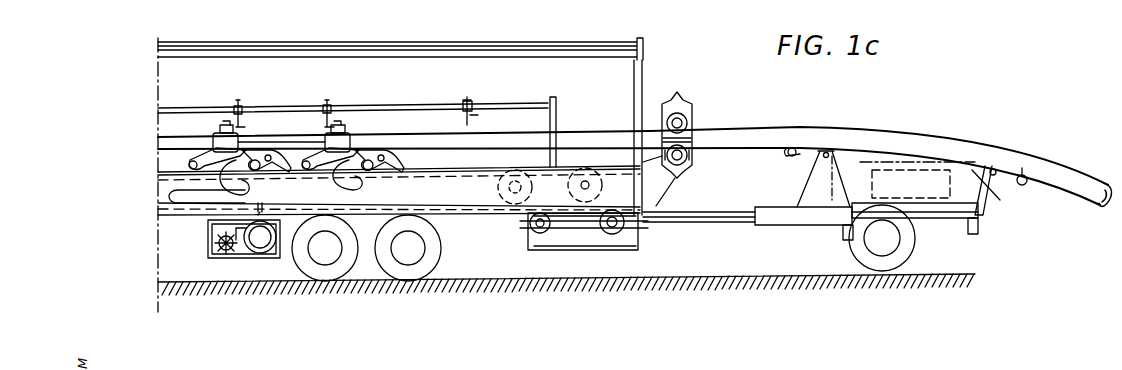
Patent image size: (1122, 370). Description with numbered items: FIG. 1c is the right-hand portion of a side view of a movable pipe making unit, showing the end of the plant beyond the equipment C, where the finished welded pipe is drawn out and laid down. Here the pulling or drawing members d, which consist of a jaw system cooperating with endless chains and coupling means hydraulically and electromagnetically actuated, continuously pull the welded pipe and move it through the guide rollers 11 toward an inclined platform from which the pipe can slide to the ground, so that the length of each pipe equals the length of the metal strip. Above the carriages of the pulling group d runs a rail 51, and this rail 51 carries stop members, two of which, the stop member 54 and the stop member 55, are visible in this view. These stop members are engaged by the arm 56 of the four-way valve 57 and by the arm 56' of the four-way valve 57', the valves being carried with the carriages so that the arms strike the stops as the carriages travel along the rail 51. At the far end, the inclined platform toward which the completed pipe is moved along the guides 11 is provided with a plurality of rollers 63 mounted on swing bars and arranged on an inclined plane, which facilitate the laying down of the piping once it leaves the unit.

The four-way valve 57 is at (217, 124).
The arm 56 is at (255, 101).
The pulling or drawing members d is at (272, 144).
The stop member 54 is at (333, 103).
The arm 56' is at (359, 107).
The four-way valve 57' is at (360, 142).
The stop member 55 is at (472, 102).
The rail 51 is at (549, 100).
The guide rollers 11 is at (691, 117).
The rollers 63 is at (786, 146).
The equipment C is at (840, 234).